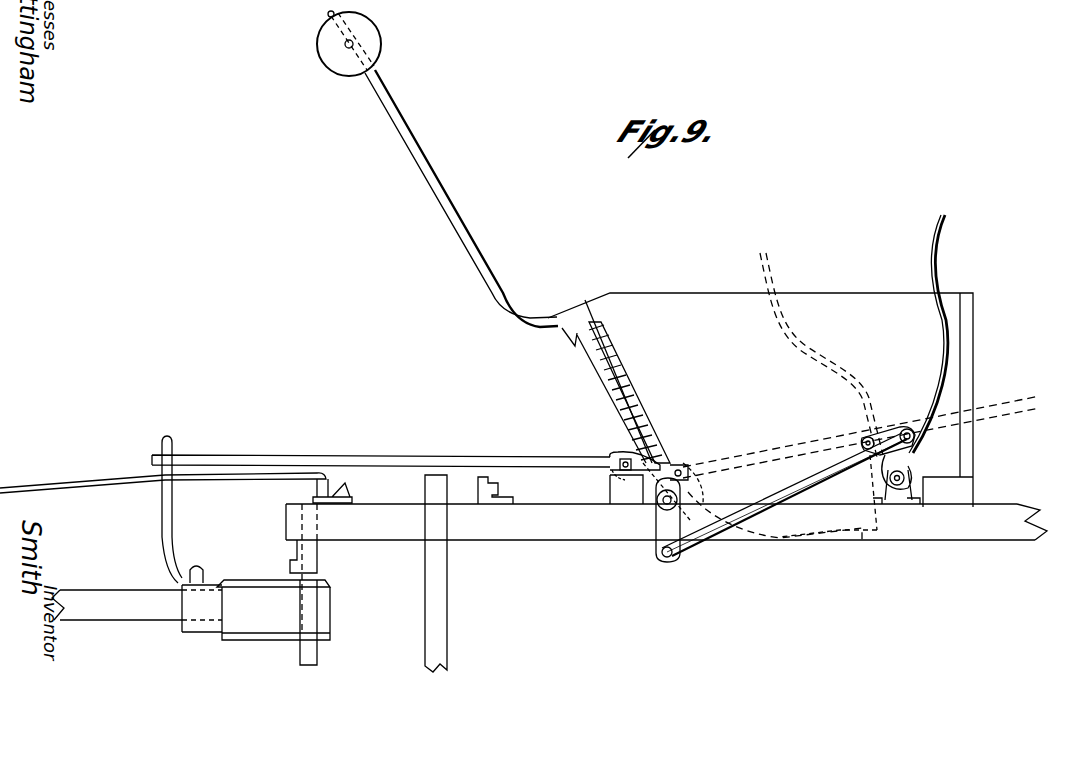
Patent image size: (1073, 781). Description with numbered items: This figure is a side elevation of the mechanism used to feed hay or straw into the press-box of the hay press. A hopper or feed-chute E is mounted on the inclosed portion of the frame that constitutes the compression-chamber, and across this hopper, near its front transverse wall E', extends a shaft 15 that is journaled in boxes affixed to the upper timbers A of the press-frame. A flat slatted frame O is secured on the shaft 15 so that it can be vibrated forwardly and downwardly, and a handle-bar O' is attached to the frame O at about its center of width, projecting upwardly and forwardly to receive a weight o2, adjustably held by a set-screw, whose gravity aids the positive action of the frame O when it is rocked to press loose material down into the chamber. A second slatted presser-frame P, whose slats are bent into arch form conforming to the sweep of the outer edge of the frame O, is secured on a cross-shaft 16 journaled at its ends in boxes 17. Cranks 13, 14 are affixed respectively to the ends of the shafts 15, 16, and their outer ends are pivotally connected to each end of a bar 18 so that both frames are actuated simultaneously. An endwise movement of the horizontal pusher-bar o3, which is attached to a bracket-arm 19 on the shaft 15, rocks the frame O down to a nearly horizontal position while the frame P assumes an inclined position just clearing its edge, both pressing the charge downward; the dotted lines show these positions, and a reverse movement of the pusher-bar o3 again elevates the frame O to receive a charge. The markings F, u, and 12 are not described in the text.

The weight o2 is at (364, 43).
The handle-bar O' is at (702, 274).
The flat slatted frame O is at (725, 452).
The horizontal pusher-bar o3 is at (381, 450).
The hopper E is at (760, 400).
The front transverse wall E' is at (607, 381).
The feed opening F is at (821, 355).
The slatted presser-frame P is at (943, 350).
The upper timbers A is at (666, 522).
The rod u is at (176, 509).
The block 12 is at (925, 495).
The crank 13 is at (915, 452).
The crank 14 is at (660, 525).
The shaft 15 is at (688, 475).
The cross-shaft 16 is at (903, 498).
The boxes 17 is at (893, 500).
The bar 18 is at (822, 478).
The bracket-arm 19 is at (650, 457).